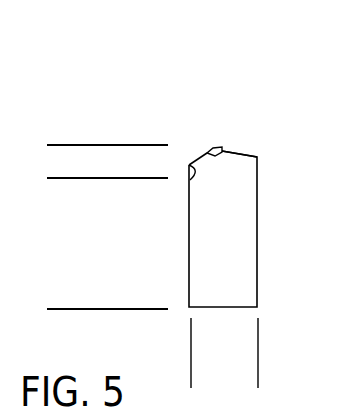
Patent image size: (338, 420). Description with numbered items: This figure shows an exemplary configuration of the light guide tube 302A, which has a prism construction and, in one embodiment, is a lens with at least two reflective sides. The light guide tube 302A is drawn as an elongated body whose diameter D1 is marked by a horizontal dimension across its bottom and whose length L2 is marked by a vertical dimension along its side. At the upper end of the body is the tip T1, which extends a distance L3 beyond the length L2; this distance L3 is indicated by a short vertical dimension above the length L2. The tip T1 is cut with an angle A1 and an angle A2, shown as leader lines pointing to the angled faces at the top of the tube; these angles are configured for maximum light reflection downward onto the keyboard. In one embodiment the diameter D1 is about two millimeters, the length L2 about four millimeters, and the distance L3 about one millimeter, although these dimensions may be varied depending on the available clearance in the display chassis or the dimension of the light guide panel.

The light guide tube 302A is at (192, 128).
The tip T1 is at (220, 138).
The angle A1 is at (198, 171).
The angle A2 is at (220, 151).
The length L2 is at (159, 178).
The distance L3 is at (65, 145).
The diameter D1 is at (258, 363).